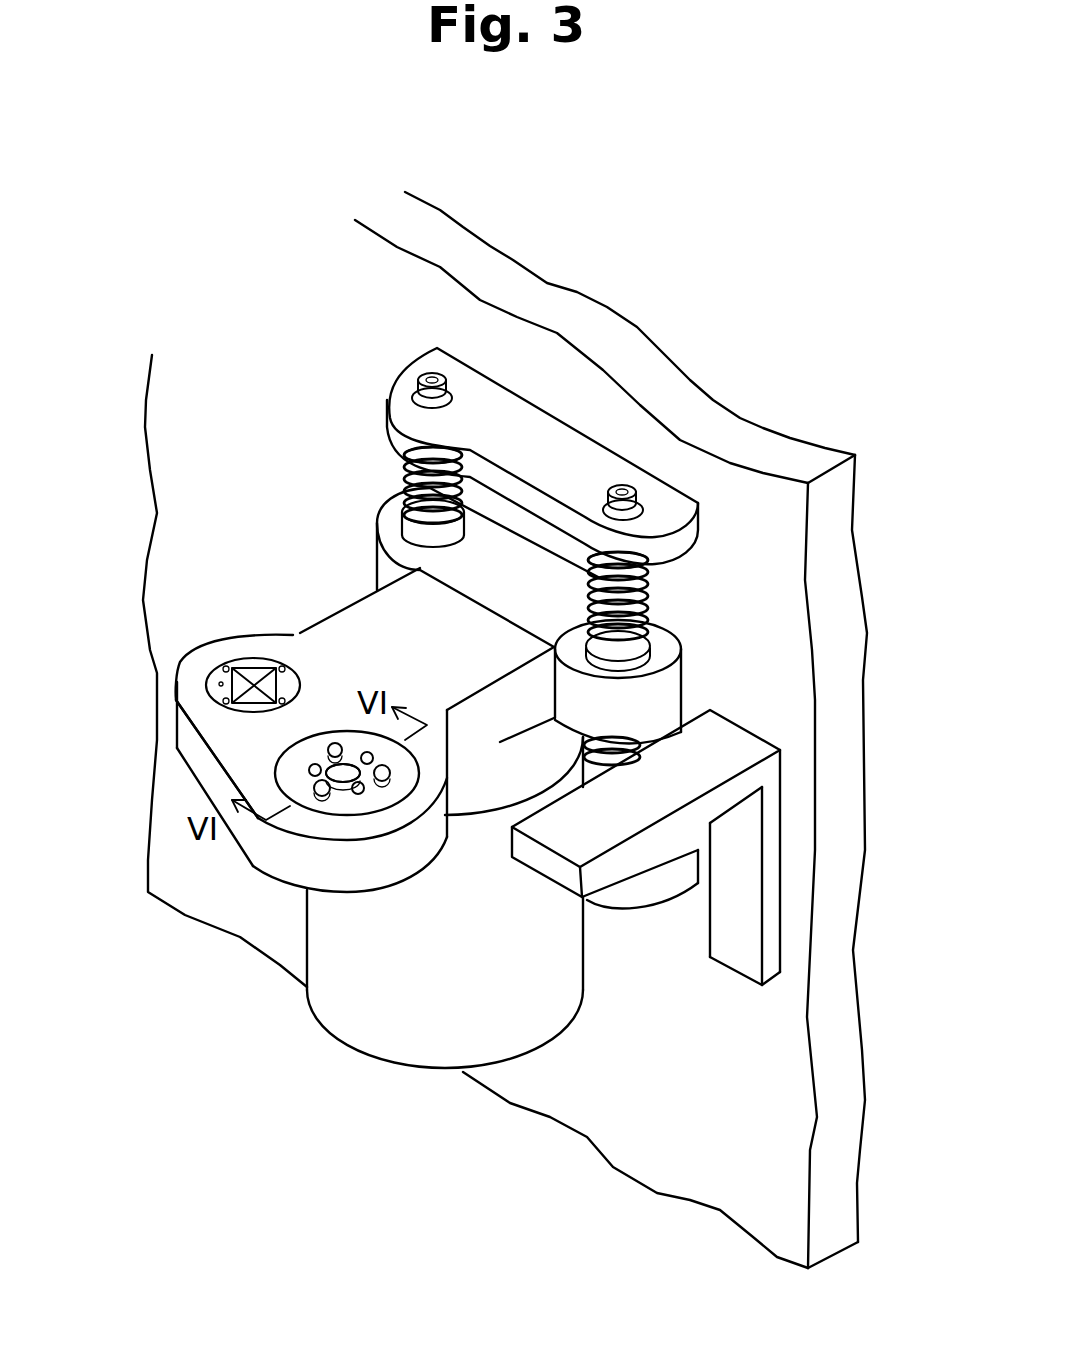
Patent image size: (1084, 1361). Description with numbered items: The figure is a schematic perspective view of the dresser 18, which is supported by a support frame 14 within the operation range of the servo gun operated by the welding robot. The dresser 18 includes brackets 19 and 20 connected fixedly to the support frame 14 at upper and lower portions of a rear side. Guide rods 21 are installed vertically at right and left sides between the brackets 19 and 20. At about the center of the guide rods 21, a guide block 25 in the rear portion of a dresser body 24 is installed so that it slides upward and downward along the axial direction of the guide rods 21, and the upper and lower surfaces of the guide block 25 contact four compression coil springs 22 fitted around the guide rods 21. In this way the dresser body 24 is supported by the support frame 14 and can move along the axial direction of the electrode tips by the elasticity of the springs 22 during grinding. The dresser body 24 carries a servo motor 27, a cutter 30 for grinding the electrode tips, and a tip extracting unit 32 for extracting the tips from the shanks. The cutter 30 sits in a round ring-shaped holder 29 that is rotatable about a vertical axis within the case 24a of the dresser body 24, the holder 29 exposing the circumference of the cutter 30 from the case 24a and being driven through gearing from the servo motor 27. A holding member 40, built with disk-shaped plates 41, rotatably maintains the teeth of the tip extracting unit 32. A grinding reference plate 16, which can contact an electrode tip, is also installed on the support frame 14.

The support frame 14 is at (635, 1120).
The grinding reference plate 16 is at (652, 808).
The dresser 18 is at (230, 1048).
The bracket 19 is at (662, 503).
The bracket 20 is at (612, 903).
The guide rod 21 is at (403, 475).
The compression coil spring 22 is at (403, 457).
The dresser body 24 is at (357, 627).
The case 24a is at (197, 757).
The guide block 25 is at (667, 700).
The servo motor 27 is at (435, 1037).
The holder 29 is at (220, 682).
The cutter 30 is at (253, 673).
The tip extracting unit 32 is at (380, 825).
The holding member 40 is at (340, 795).
The disk-shaped plate 41 is at (340, 795).